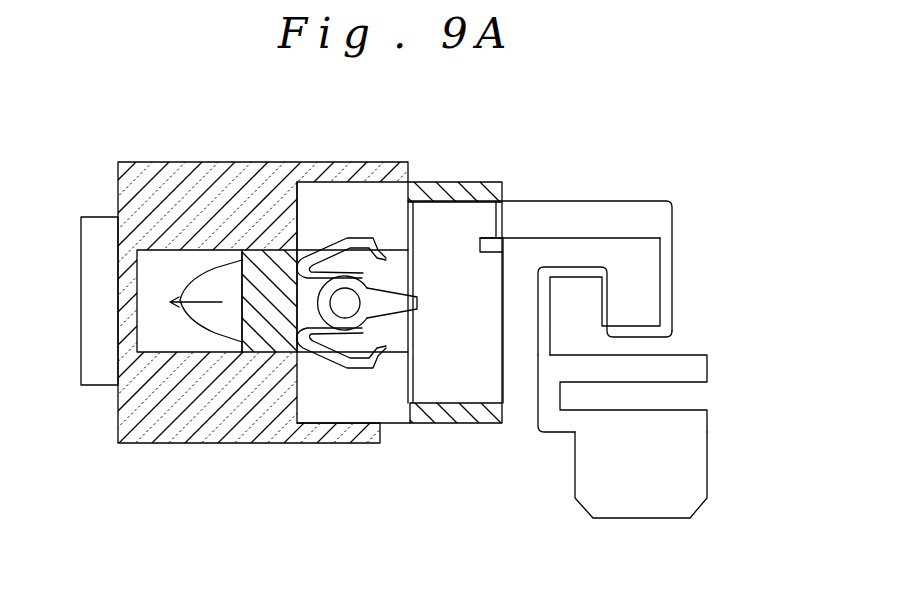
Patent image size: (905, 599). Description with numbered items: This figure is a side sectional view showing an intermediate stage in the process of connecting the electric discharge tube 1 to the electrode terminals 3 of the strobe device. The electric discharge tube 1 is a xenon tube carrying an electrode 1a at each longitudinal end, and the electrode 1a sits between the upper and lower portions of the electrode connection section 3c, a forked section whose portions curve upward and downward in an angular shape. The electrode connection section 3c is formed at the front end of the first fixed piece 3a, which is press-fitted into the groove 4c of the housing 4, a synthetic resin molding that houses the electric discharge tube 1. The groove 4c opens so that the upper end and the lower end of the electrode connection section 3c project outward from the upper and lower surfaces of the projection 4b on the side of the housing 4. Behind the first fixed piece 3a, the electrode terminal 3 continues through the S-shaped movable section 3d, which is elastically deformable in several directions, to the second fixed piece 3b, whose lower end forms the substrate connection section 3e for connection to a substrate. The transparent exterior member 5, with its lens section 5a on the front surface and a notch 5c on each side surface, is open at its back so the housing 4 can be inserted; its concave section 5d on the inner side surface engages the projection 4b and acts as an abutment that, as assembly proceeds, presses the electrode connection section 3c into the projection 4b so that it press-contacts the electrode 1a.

The electric discharge tube 1 is at (382, 288).
The electrode 1a is at (390, 313).
The electrode terminal 3 is at (566, 200).
The first fixed piece 3a is at (470, 382).
The second fixed piece 3b is at (680, 420).
The electrode connection section 3c is at (357, 237).
The movable section 3d is at (612, 297).
The substrate connection section 3e is at (643, 512).
The housing 4 is at (450, 182).
The projection 4b is at (268, 332).
The groove 4c is at (357, 337).
The exterior member 5 is at (267, 162).
The lens section 5a is at (90, 263).
The notch 5c is at (216, 283).
The concave section 5d is at (160, 333).